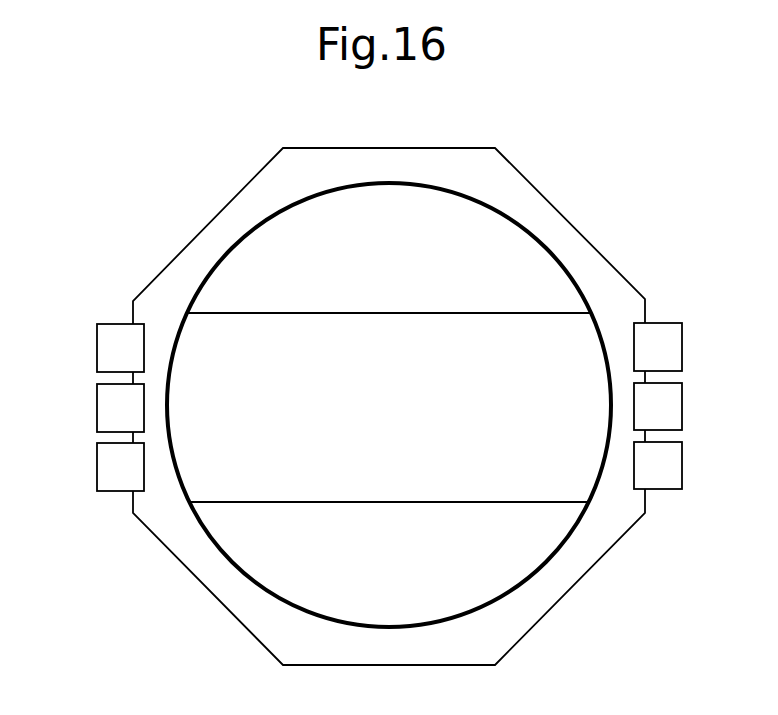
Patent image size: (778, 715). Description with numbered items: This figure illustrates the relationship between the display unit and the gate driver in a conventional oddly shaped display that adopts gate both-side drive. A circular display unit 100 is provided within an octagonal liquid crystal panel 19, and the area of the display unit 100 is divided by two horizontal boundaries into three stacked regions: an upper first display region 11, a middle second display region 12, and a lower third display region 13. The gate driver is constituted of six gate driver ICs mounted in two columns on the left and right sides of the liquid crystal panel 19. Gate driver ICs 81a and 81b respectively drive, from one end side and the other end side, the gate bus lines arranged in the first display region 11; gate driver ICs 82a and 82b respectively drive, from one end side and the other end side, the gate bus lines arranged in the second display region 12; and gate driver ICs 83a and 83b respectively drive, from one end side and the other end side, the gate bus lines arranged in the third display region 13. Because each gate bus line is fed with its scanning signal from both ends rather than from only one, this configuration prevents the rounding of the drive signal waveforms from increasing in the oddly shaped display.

The liquid crystal panel 19 is at (387, 147).
The display unit 100 is at (388, 182).
The first display region 11 is at (433, 217).
The second display region 12 is at (523, 355).
The third display region 13 is at (472, 564).
The gate driver IC 81a is at (97, 352).
The gate driver IC 82a is at (97, 412).
The gate driver IC 83a is at (97, 471).
The gate driver IC 81b is at (682, 341).
The gate driver IC 82b is at (682, 400).
The gate driver IC 83b is at (682, 460).